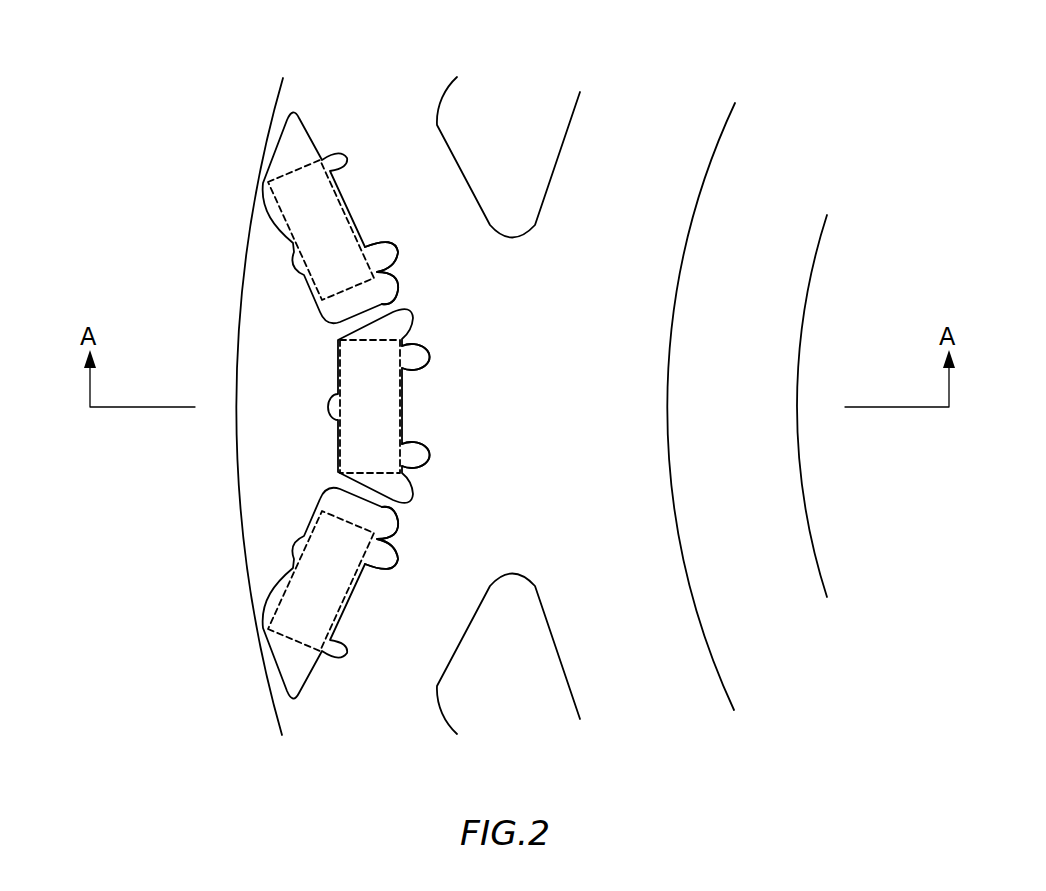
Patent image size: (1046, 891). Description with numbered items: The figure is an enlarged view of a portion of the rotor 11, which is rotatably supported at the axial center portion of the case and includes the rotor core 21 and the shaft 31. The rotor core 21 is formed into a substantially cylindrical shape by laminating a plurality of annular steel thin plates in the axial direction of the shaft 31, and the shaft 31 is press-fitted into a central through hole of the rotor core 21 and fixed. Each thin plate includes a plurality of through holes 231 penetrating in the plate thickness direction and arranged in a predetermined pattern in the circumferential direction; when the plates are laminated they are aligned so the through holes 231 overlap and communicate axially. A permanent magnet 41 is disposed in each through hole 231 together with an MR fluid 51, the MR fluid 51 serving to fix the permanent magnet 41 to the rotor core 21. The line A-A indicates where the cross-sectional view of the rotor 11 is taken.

The rotor 11 is at (108, 78).
The rotor core 21 is at (712, 317).
The shaft 31 is at (832, 520).
The permanent magnet 41 is at (312, 233).
The MR fluid 51 is at (280, 165).
The through hole 231 is at (295, 142).